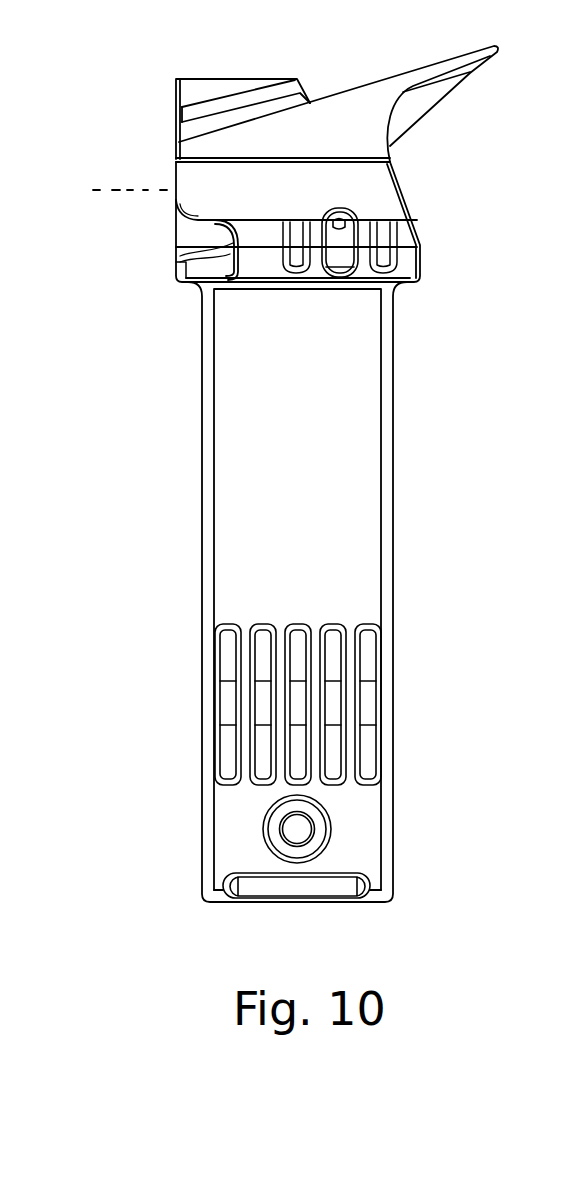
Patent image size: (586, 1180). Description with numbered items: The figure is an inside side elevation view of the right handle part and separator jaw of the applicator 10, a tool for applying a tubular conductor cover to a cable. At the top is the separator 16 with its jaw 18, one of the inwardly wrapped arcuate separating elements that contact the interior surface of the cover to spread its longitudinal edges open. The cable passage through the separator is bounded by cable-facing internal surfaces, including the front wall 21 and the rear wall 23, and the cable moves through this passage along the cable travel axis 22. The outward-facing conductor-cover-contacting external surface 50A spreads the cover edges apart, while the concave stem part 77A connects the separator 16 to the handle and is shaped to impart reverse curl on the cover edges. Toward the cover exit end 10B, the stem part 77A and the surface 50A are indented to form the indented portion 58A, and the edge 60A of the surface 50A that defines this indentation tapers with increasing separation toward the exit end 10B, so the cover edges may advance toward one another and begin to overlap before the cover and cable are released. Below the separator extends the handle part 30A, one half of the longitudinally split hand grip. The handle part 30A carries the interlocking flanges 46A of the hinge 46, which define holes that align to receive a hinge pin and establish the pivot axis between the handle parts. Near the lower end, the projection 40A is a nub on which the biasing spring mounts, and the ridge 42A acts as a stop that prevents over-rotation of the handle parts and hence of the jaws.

The applicator 10 is at (275, 489).
The cover exit end 10B is at (118, 118).
The separator 16 is at (403, 74).
The jaws 18 is at (190, 148).
The front wall 21 is at (327, 165).
The cable travel axis 22 is at (113, 190).
The rear wall 23 is at (307, 218).
The conductor-cover-contacting external surface 50A is at (180, 200).
The edge 60A is at (200, 225).
The concave stem part 77A is at (180, 256).
The indented portion 58A is at (182, 258).
The handle part 30A is at (235, 487).
The interlocking flange 46A is at (298, 704).
The hinge 46 is at (370, 680).
The projection 40A is at (278, 832).
The ridge 42A is at (252, 887).